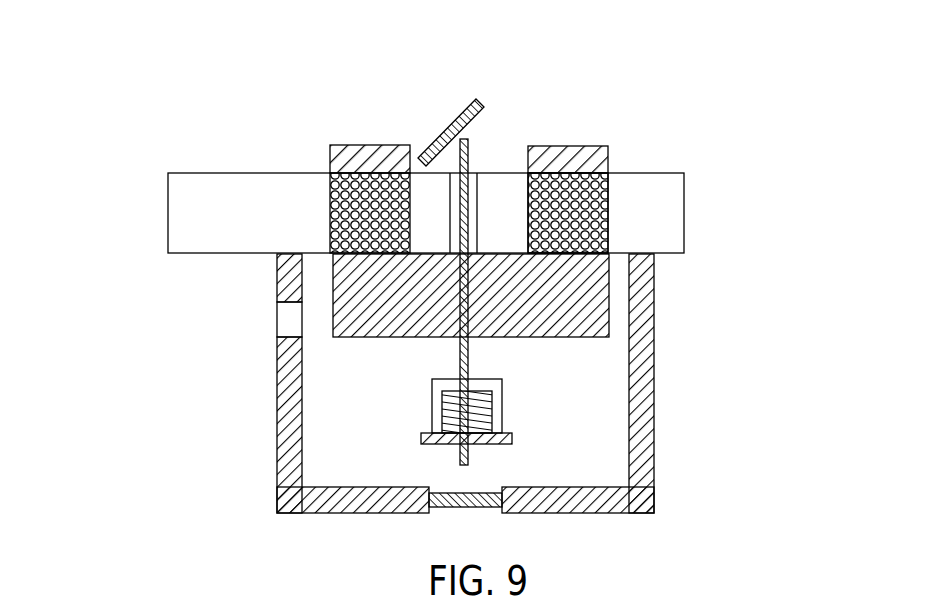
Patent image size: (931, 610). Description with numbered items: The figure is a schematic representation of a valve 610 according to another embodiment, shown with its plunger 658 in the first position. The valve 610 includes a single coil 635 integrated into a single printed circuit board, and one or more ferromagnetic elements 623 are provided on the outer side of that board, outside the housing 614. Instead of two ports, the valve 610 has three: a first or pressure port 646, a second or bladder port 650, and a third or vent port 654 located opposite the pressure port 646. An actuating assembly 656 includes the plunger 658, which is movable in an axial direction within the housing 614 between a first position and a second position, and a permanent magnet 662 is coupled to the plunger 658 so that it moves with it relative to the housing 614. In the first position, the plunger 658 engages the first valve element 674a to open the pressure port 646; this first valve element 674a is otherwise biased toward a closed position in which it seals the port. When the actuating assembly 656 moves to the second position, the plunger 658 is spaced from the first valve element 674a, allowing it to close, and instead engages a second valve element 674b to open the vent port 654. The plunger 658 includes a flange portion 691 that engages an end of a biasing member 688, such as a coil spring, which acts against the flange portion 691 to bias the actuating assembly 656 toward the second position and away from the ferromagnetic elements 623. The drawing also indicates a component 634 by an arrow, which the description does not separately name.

The valve 610 is at (150, 119).
The housing 614 is at (654, 345).
The ferromagnetic elements 623 is at (333, 145).
The coil assembly 634 is at (682, 141).
The coil 635 is at (608, 217).
The pressure port 646 is at (477, 207).
The bladder port 650 is at (277, 313).
The vent port 654 is at (503, 510).
The actuating assembly 656 is at (570, 375).
The plunger 658 is at (472, 283).
The permanent magnet 662 is at (378, 330).
The first valve element 674a is at (447, 136).
The second valve element 674b is at (462, 508).
The biasing member 688 is at (443, 405).
The flange portion 691 is at (440, 444).